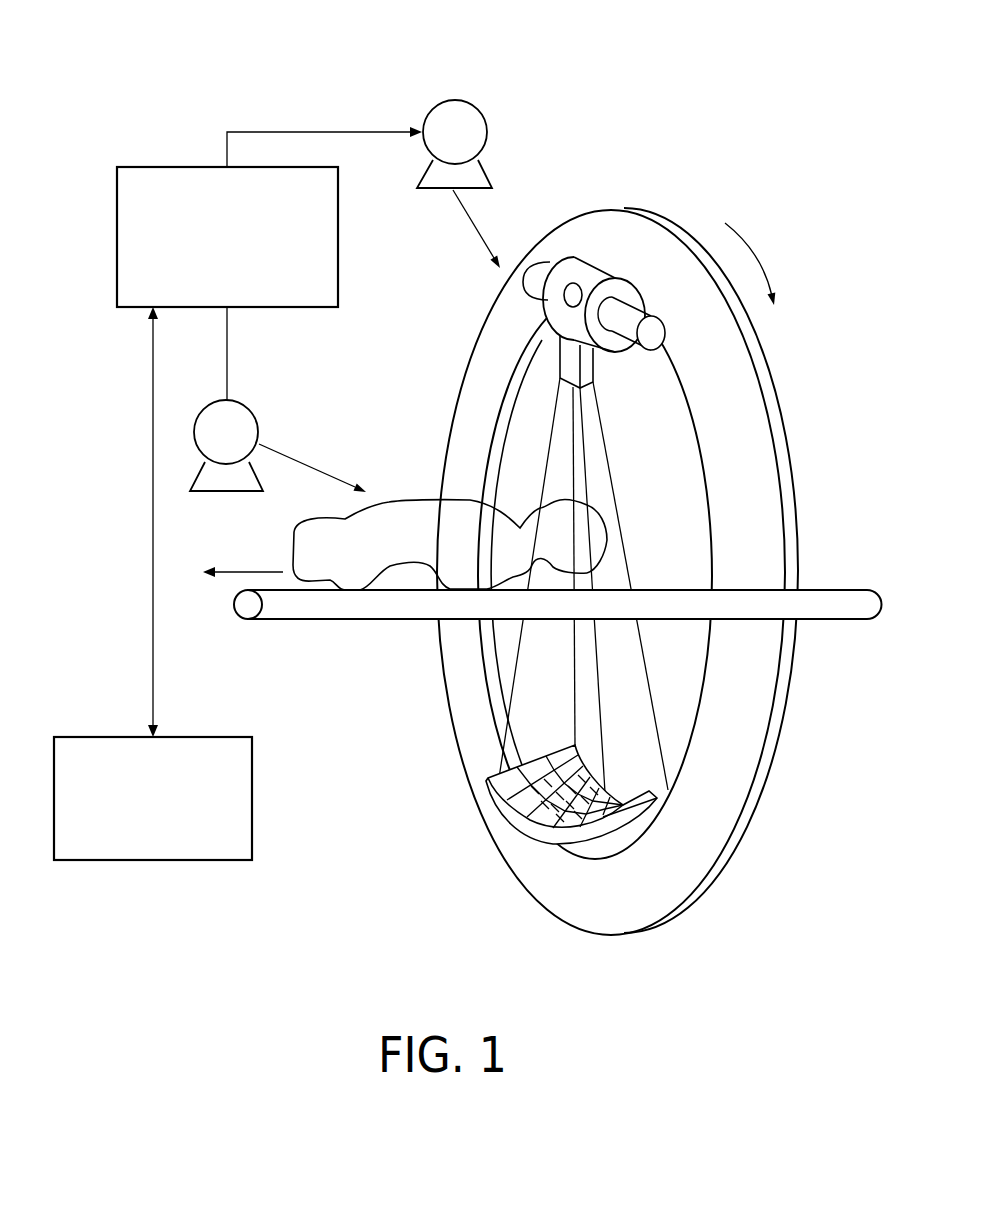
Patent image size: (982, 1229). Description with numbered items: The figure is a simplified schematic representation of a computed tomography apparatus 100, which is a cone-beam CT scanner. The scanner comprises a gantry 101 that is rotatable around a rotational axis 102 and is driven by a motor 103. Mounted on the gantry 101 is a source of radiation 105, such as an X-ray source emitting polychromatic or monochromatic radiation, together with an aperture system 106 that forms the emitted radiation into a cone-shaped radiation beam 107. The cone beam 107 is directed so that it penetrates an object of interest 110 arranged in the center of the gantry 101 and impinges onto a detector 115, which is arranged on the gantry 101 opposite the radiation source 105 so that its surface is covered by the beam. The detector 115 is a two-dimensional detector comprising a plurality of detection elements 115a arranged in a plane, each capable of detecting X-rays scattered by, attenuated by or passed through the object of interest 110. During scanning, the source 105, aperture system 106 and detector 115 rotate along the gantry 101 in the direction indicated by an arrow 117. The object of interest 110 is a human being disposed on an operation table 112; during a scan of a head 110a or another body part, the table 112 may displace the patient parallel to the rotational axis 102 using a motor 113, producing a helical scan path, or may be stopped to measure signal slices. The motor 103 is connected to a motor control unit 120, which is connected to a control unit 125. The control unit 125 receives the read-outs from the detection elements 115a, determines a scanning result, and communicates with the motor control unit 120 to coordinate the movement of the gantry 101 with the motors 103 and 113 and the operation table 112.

The computed tomography apparatus 100 is at (716, 74).
The gantry 101 is at (760, 727).
The rotational axis 102 is at (253, 570).
The motor 103 is at (488, 129).
The source of radiation 105 is at (610, 273).
The aperture system 106 is at (567, 358).
The cone-shaped radiation beam 107 is at (612, 481).
The object of interest 110 is at (405, 506).
The head 110a is at (610, 538).
The operation table 112 is at (849, 590).
The motor 113 is at (259, 429).
The detector 115 is at (537, 840).
The detection elements 115a is at (540, 768).
The arrow 117 is at (745, 257).
The motor control unit 120 is at (165, 167).
The control unit 125 is at (253, 798).